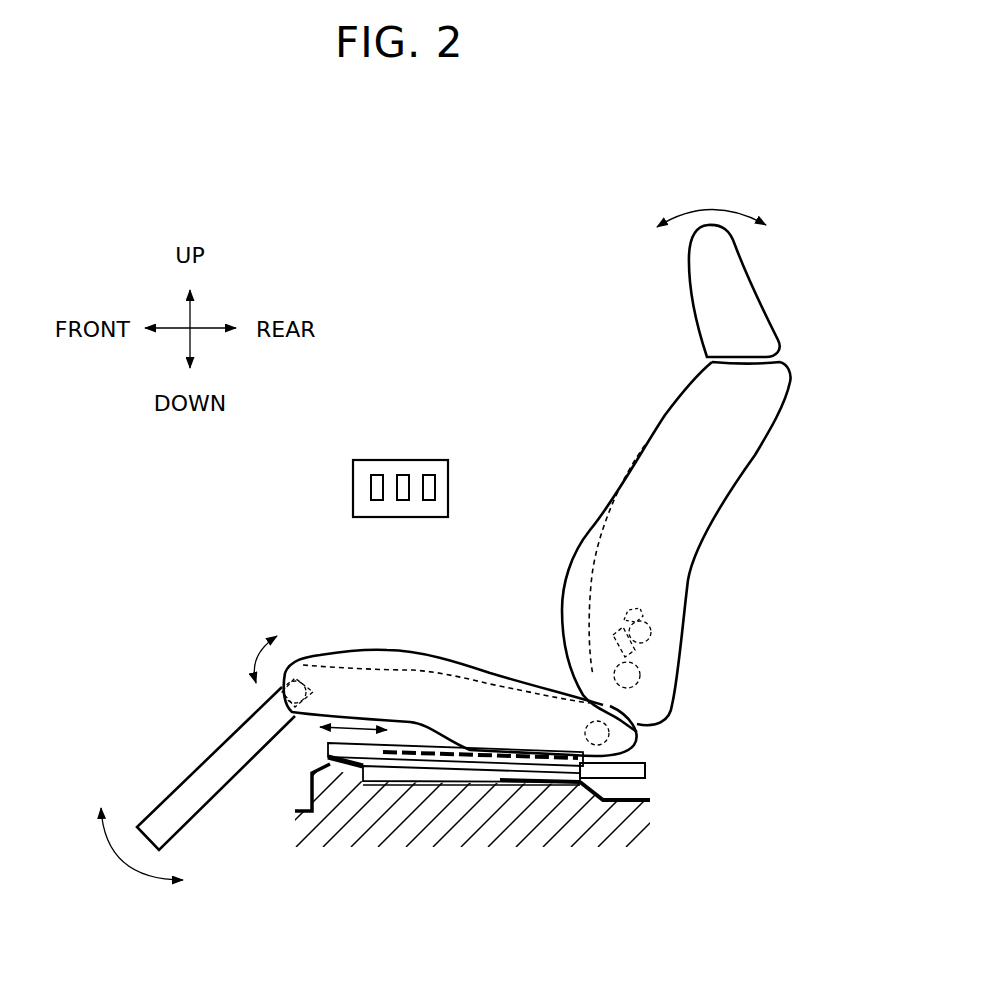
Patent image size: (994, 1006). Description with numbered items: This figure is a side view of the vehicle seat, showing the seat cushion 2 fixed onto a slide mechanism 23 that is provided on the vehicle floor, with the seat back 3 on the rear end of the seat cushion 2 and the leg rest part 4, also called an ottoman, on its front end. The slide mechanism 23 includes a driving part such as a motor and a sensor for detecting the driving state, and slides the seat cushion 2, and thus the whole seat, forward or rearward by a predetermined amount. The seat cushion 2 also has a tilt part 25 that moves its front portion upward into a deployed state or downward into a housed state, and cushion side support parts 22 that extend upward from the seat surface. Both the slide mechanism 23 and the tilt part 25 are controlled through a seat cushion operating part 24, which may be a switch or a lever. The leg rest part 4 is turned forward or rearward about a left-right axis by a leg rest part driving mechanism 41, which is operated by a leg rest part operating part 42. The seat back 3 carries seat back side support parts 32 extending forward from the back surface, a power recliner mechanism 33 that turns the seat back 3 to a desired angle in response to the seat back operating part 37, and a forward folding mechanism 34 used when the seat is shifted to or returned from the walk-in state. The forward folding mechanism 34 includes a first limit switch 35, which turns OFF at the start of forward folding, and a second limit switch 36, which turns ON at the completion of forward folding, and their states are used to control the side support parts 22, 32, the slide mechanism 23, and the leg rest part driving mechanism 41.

The seat cushion 2 is at (368, 641).
The seat back 3 is at (662, 398).
The leg rest part 4 is at (163, 769).
The cushion side support parts 22 is at (405, 660).
The slide mechanism 23 is at (659, 786).
The seat cushion operating part 24 is at (375, 476).
The tilt part 25 is at (604, 735).
The seat back side support parts 32 is at (590, 556).
The power recliner mechanism 33 is at (634, 678).
The forward folding mechanism 34 is at (644, 637).
The first limit switch 35 is at (622, 622).
The second limit switch 36 is at (624, 646).
The seat back operating part 37 is at (400, 476).
The leg rest part driving mechanism 41 is at (283, 695).
The leg rest part operating part 42 is at (430, 476).